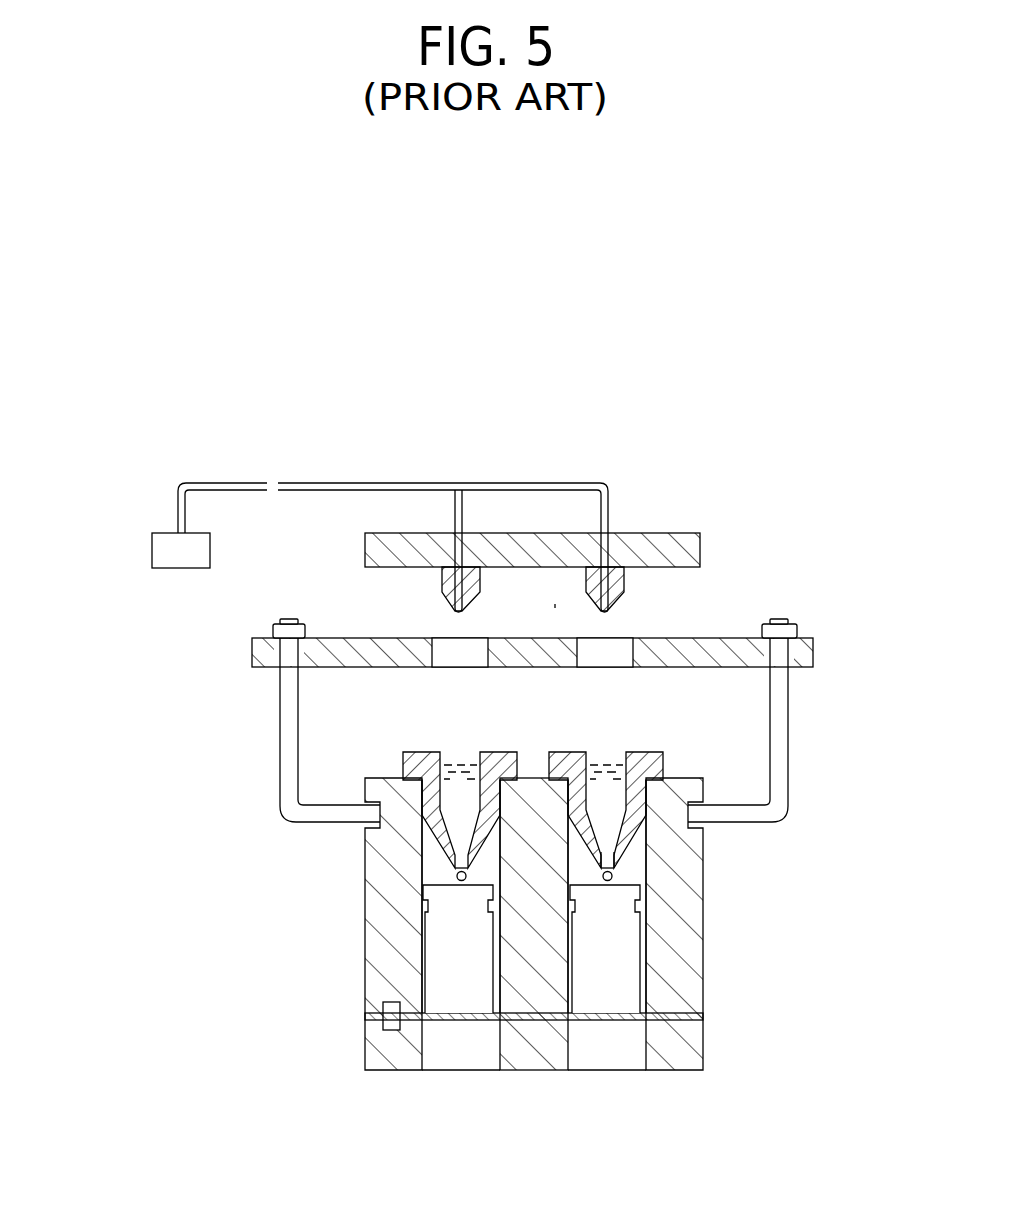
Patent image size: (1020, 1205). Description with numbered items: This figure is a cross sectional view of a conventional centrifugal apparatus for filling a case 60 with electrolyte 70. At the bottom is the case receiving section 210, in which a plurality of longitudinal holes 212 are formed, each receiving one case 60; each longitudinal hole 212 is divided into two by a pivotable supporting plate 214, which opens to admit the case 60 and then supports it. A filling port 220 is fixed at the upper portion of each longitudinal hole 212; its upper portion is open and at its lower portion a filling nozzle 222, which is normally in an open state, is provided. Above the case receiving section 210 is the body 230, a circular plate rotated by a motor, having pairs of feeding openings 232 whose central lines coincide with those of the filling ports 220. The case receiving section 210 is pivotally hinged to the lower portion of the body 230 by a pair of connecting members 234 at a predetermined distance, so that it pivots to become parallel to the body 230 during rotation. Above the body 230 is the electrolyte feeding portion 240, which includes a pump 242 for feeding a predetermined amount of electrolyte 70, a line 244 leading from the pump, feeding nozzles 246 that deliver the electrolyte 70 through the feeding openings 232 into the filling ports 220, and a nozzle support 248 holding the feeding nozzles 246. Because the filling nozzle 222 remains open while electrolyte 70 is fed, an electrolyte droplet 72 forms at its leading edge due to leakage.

The case 60 is at (440, 953).
The electrolyte 70 is at (460, 762).
The electrolyte droplet 72 is at (455, 875).
The case receiving section 210 is at (710, 952).
The longitudinal holes 212 is at (430, 849).
The supporting plate 214 is at (605, 1021).
The filling port 220 is at (405, 766).
The filling nozzle 222 is at (612, 860).
The body 230 is at (813, 656).
The feeding openings 232 is at (455, 650).
The connecting members 234 is at (285, 800).
The electrolyte feeding portion 240 is at (158, 517).
The pump 242 is at (152, 552).
The supply tube 244 is at (543, 483).
The feeding nozzles 246 is at (625, 582).
The nozzle support 248 is at (676, 533).